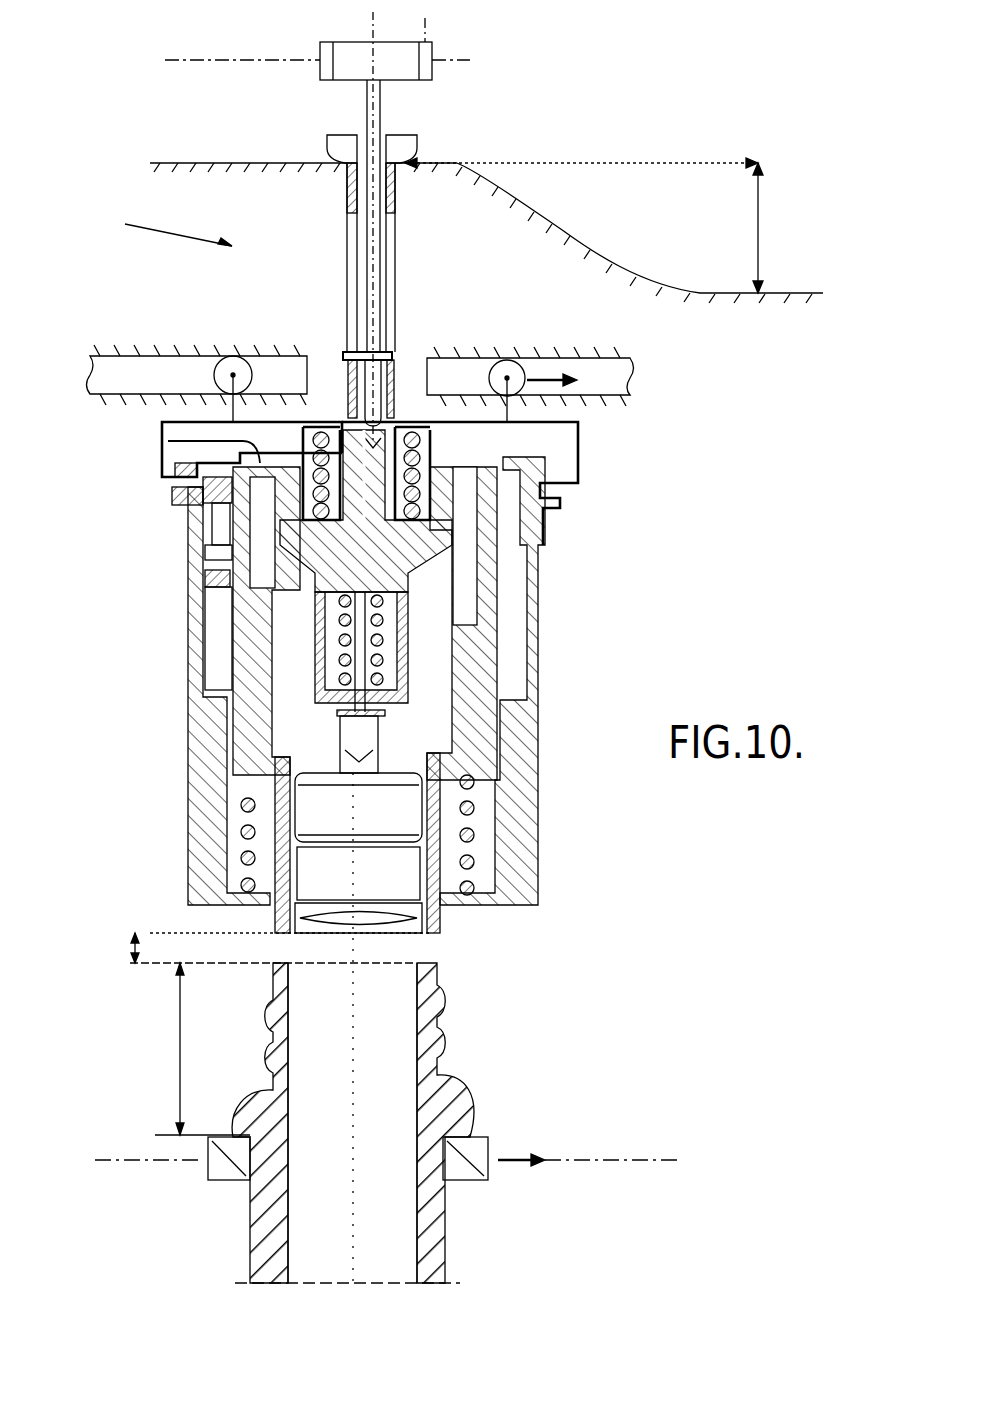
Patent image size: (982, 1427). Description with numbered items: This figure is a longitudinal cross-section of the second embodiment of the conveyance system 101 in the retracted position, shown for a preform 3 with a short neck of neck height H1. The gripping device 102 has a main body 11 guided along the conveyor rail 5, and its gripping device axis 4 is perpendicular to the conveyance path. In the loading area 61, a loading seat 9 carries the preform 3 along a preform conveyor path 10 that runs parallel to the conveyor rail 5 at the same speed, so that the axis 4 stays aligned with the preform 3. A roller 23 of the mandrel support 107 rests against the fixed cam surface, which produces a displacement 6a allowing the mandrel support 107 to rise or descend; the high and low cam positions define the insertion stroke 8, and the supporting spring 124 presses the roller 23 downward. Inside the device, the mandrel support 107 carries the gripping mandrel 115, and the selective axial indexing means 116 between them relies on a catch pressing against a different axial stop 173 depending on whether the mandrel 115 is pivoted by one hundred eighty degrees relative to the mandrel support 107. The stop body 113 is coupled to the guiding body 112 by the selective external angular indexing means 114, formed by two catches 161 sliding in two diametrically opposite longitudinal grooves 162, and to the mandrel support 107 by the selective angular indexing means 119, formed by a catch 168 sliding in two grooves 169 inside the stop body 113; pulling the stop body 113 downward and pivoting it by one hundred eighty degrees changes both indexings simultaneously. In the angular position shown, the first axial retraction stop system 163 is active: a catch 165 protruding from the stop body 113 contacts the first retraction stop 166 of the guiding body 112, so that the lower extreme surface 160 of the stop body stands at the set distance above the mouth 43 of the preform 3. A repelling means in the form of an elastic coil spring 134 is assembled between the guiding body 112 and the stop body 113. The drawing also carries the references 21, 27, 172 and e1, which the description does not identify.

The gripping device axis 4 is at (378, 24).
The actuating block 21 is at (383, 67).
The roller 23 is at (340, 143).
The loading area 61 is at (581, 151).
The displacement 6a is at (565, 232).
The insertion stroke 8 is at (766, 228).
The conveyance system 101 is at (159, 229).
The conveyor rail 5 is at (360, 383).
The main body 11 is at (578, 456).
The supporting spring 124 is at (430, 446).
The angular indexing means 119 is at (156, 446).
The catch 168 is at (185, 436).
The grooves 169 is at (180, 470).
The external angular indexing means 114 is at (143, 518).
The longitudinal grooves 162 is at (200, 493).
The catches 161 is at (228, 503).
The first axial retraction stop system 163 is at (141, 627).
The first retraction stop 166 is at (210, 574).
The catch 165 is at (208, 590).
The mandrel support 107 is at (383, 540).
The stop body 113 is at (255, 745).
The selective axial indexing means 116 is at (341, 682).
The coil spring 172 is at (313, 667).
The axial stop 173 is at (328, 710).
The guiding body 112 is at (200, 775).
The gripping device 102 is at (539, 697).
The repelling means 134 is at (248, 858).
The gripping mandrel 115 is at (310, 815).
The lower extreme surface 160 is at (430, 940).
The gap distance e1 is at (271, 929).
The mouth 43 is at (430, 960).
The neck height H1 is at (200, 1049).
The preform 3 is at (437, 1041).
The neck bore 27 is at (416, 1112).
The loading seat 9 is at (225, 1180).
The preform conveyor path 10 is at (112, 1166).